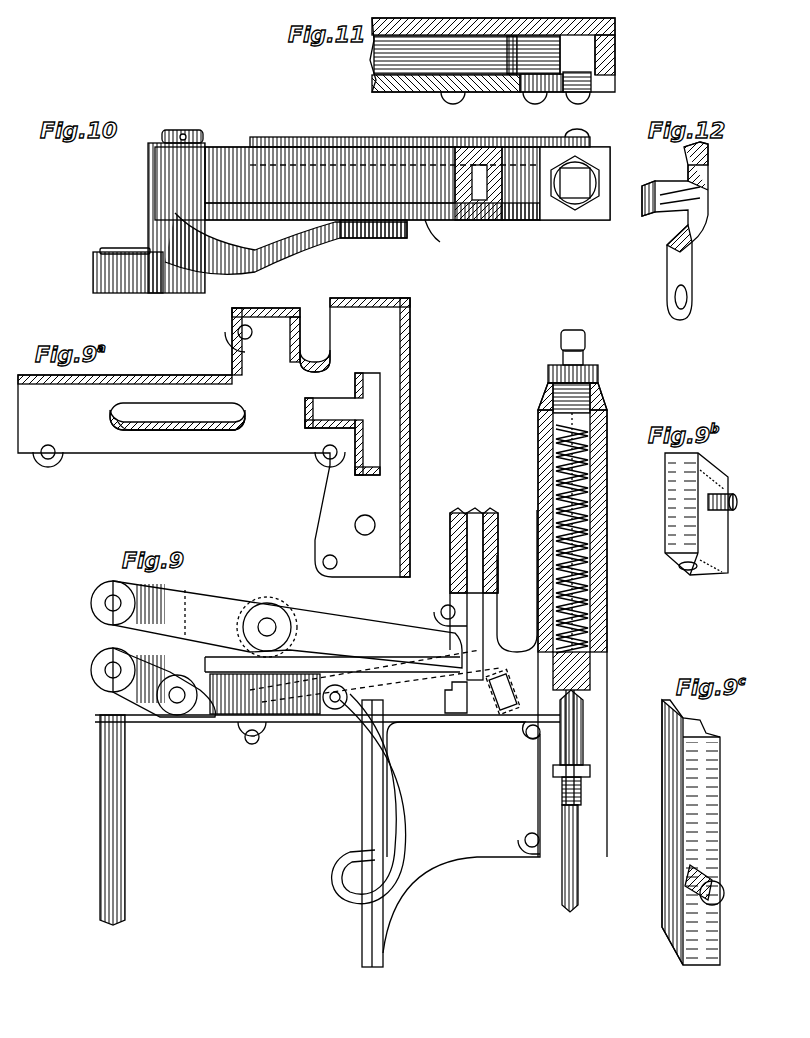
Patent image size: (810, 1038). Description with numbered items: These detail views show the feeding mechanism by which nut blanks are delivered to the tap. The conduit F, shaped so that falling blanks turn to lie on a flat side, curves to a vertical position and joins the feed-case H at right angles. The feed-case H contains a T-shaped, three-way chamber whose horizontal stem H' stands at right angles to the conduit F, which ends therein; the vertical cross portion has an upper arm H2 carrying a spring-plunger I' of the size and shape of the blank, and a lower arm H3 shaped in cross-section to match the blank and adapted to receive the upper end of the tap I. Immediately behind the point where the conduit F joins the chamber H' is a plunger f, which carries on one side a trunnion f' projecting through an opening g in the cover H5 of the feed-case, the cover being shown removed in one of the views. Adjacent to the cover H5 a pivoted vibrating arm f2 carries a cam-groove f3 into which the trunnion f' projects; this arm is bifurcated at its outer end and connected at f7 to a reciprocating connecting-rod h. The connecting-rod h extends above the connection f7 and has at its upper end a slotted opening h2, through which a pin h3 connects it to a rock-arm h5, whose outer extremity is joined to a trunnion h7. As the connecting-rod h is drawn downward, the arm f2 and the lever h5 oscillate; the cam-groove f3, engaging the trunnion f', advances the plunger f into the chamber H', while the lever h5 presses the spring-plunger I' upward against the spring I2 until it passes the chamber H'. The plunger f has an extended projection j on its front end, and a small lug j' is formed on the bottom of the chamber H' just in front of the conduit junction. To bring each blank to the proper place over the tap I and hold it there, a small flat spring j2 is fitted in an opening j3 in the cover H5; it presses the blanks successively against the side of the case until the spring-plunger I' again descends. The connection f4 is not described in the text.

In FIG. 10, the connecting-rod h is at (93, 275).
In FIG. 9, the connecting-rod h is at (100, 833).
In FIG. 9, the slotted opening h2 is at (108, 627).
In FIG. 9, the pin h3 is at (110, 594).
In FIG. 11, the rock-arm h5 is at (492, 71).
In FIG. 10, the rock-arm h5 is at (376, 125).
In FIG. 9, the rock-arm h5 is at (318, 620).
In FIG. 9B, the trunnion h7 is at (733, 497).
In FIG. 9, the plunger f is at (327, 697).
In FIG. 9, the trunnion f' is at (311, 732).
In FIG. 9C, the trunnion f' is at (682, 899).
In FIG. 10, the vibrating arm f2 is at (272, 230).
In FIG. 9, the vibrating arm f2 is at (319, 694).
In FIG. 9, the cam-groove f3 is at (345, 773).
In FIG. 9, the pivot hole f4 is at (177, 705).
In FIG. 9, the connection point f7 is at (110, 680).
In FIG. 9A, the opening g is at (183, 420).
In FIG. 9, the extended projection j is at (452, 719).
In FIG. 11, the lug j' is at (527, 37).
In FIG. 9, the lug j' is at (503, 712).
In FIG. 11, the flat spring j2 is at (585, 63).
In FIG. 12, the flat spring j2 is at (678, 231).
In FIG. 11, the opening j3 is at (533, 84).
In FIG. 9A, the opening j3 is at (340, 408).
In FIG. 9, the conduit F is at (452, 576).
In FIG. 9C, the conduit F is at (691, 832).
In FIG. 9, the feed-case H is at (461, 731).
In FIG. 9, the chamber stem H' is at (513, 692).
In FIG. 9, the upper arm H2 is at (592, 610).
In FIG. 9, the lower arm H3 is at (582, 820).
In FIG. 10, the cover H5 is at (379, 218).
In FIG. 9A, the cover H5 is at (214, 437).
In FIG. 9, the tap I is at (583, 801).
In FIG. 9, the spring-plunger I' is at (591, 665).
In FIG. 9B, the spring-plunger I' is at (682, 514).
In FIG. 9, the spring I2 is at (540, 462).